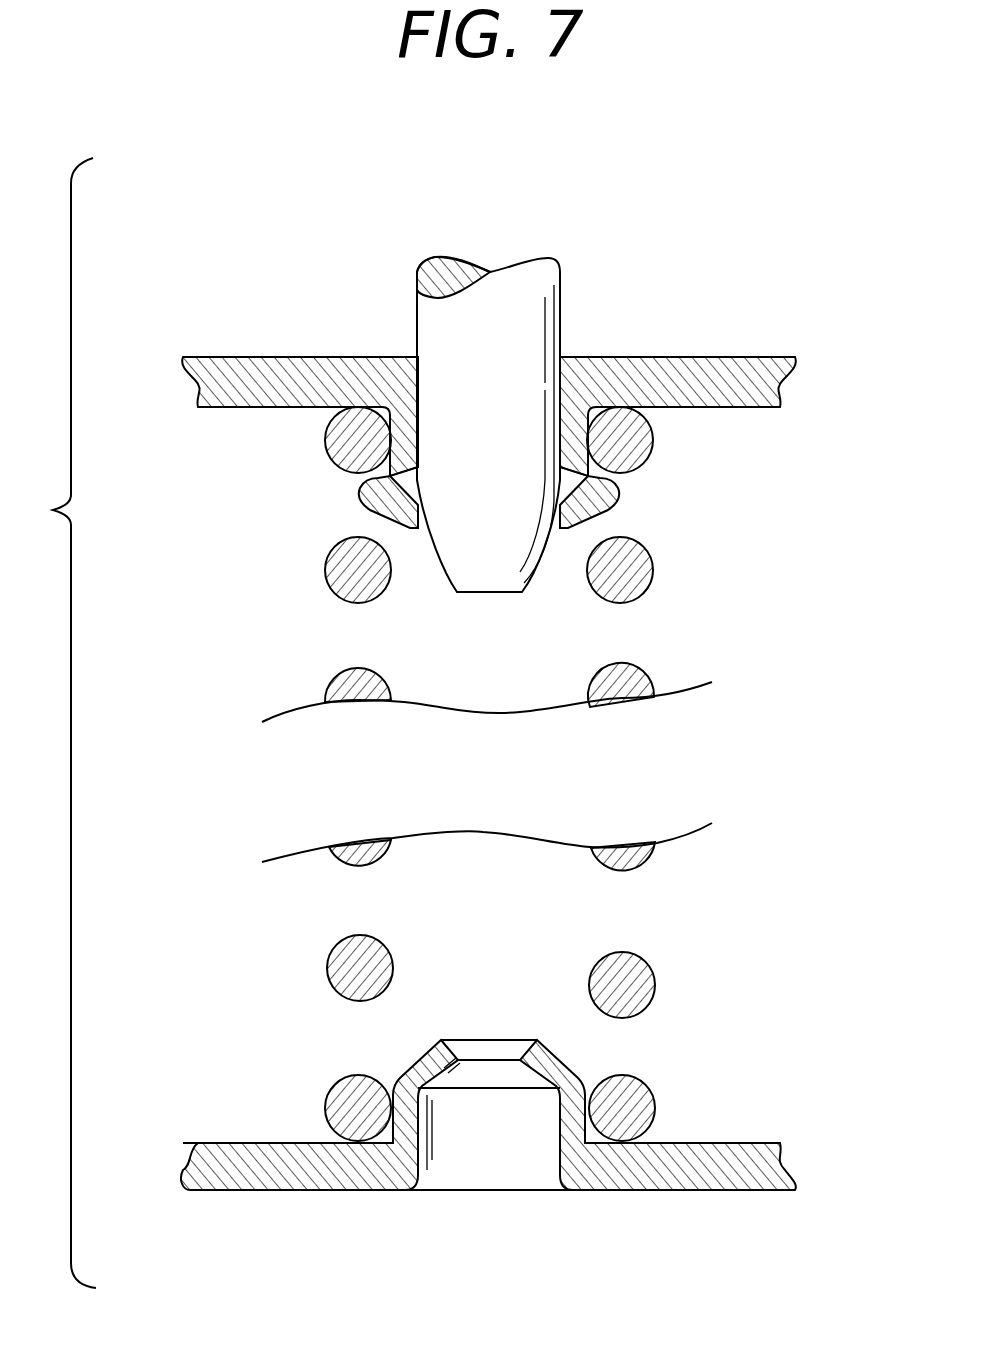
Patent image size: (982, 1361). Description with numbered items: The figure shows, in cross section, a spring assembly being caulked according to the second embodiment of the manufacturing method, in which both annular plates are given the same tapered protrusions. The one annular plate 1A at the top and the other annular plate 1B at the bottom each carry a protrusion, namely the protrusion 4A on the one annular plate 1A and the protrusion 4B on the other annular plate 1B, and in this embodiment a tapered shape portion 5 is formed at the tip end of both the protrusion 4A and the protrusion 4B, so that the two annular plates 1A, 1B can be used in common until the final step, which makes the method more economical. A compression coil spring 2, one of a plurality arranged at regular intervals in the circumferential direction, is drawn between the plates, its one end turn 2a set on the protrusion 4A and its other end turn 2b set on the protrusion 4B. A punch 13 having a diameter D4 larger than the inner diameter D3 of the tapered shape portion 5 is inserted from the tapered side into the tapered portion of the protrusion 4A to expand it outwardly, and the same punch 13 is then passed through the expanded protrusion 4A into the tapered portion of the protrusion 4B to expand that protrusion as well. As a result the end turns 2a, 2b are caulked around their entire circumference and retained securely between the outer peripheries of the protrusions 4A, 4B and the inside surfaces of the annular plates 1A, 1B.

The one annular plate 1A is at (233, 370).
The other annular plate 1B is at (230, 1145).
The protrusion 4A is at (574, 420).
The protrusion 4B is at (572, 1122).
The tapered shape portion 5 is at (622, 515).
The compression coil spring 2 is at (325, 560).
The one end turn 2a is at (652, 455).
The other end turn 2b is at (656, 1092).
The punch 13 is at (464, 568).
The diameter of punch D4 is at (560, 210).
The inner diameter of tapered portion D3 is at (522, 1014).